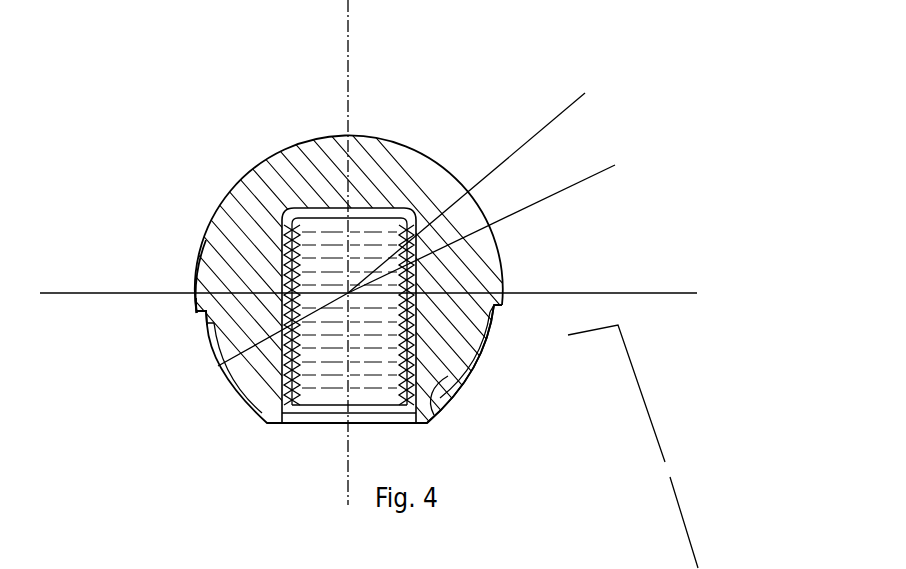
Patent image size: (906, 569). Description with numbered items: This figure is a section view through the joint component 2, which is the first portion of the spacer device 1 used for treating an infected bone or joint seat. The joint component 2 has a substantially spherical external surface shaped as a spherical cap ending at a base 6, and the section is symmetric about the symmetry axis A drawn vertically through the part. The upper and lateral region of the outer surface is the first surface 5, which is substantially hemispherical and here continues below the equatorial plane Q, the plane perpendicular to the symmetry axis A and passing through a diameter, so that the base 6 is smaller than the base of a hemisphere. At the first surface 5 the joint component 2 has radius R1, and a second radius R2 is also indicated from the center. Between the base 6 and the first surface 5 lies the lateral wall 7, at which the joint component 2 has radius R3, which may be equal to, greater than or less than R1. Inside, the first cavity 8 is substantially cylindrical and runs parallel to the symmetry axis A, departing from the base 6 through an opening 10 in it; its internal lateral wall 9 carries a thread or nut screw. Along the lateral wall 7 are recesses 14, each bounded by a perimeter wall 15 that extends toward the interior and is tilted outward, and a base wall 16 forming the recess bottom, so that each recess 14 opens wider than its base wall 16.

The spacer device 1 is at (665, 462).
The joint component 2 is at (192, 167).
The first surface 5 is at (197, 272).
The base 6 is at (286, 425).
The lateral wall 7 is at (199, 311).
The first cavity 8 is at (373, 353).
The internal lateral wall 9 is at (434, 416).
The opening 10 is at (329, 406).
The recess 14 is at (242, 391).
The perimeter wall 15 is at (206, 330).
The base wall 16 is at (468, 360).
The symmetry axis A is at (370, 62).
The equatorial plane Q is at (705, 287).
The radius R1 is at (494, 182).
The radius R2 is at (510, 222).
The radius R3 is at (210, 371).